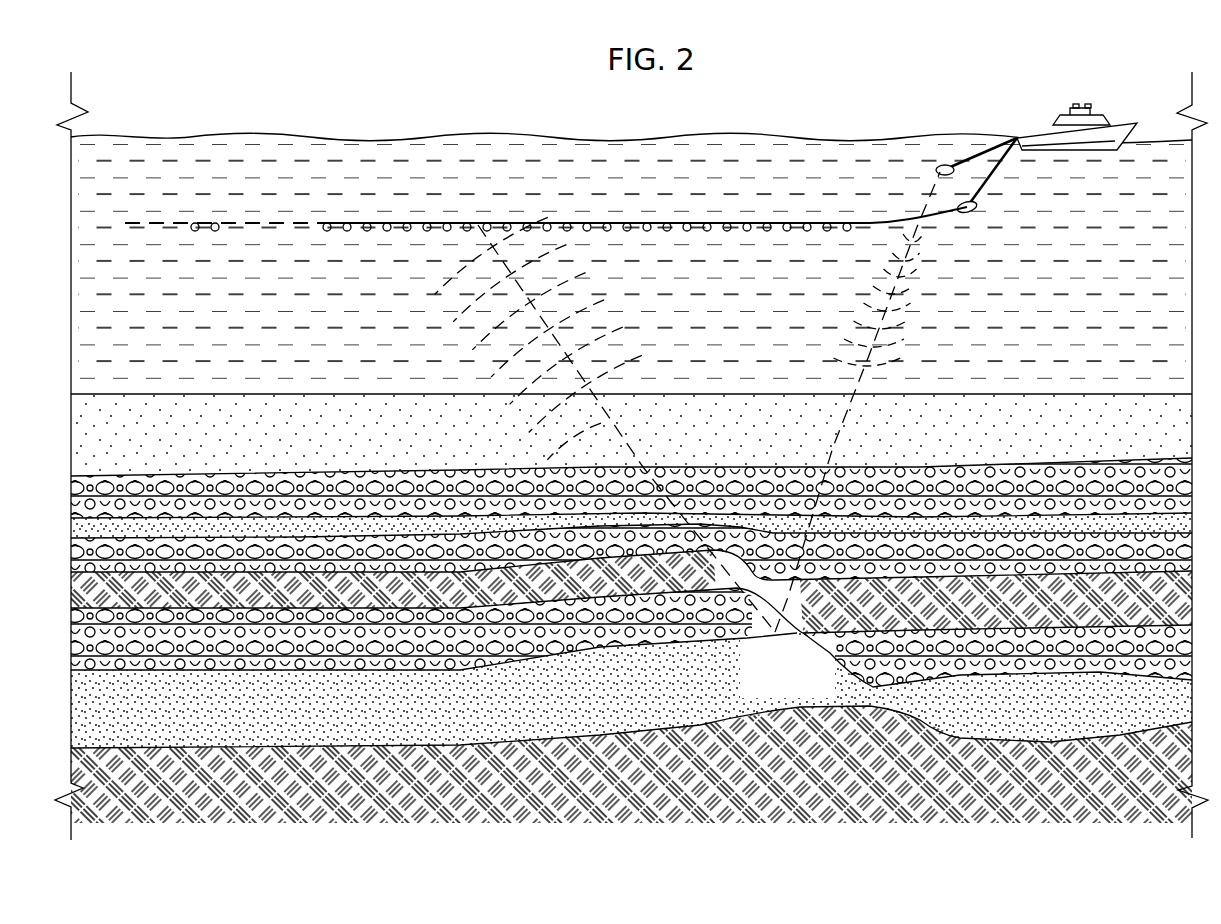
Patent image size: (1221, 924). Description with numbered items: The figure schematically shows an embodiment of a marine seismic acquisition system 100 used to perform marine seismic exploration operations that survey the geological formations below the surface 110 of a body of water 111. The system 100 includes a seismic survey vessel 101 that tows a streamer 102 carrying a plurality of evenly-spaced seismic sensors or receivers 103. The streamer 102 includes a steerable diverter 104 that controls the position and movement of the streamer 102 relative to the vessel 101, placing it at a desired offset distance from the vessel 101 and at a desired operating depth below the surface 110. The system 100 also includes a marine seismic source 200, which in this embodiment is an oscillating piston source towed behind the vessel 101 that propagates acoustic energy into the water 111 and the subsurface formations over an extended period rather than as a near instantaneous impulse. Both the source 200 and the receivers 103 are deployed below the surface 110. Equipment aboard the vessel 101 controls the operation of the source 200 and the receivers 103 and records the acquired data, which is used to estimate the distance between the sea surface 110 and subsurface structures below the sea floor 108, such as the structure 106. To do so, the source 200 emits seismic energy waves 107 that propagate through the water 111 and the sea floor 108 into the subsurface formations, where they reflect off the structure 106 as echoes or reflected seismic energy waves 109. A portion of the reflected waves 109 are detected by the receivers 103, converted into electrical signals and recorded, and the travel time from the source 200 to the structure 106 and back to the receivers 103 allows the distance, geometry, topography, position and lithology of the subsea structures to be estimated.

The marine seismic acquisition system 100 is at (468, 77).
The seismic survey vessel 101 is at (1050, 122).
The streamer 102 is at (993, 172).
The seismic receivers 103 is at (335, 232).
The steerable diverter 104 is at (970, 213).
The subsurface structure 106 is at (795, 646).
The seismic energy waves 107 is at (893, 331).
The sea floor 108 is at (1085, 394).
The reflected seismic energy waves 109 is at (478, 338).
The surface 110 is at (655, 141).
The body of water 111 is at (220, 183).
The marine seismic source 200 is at (943, 168).